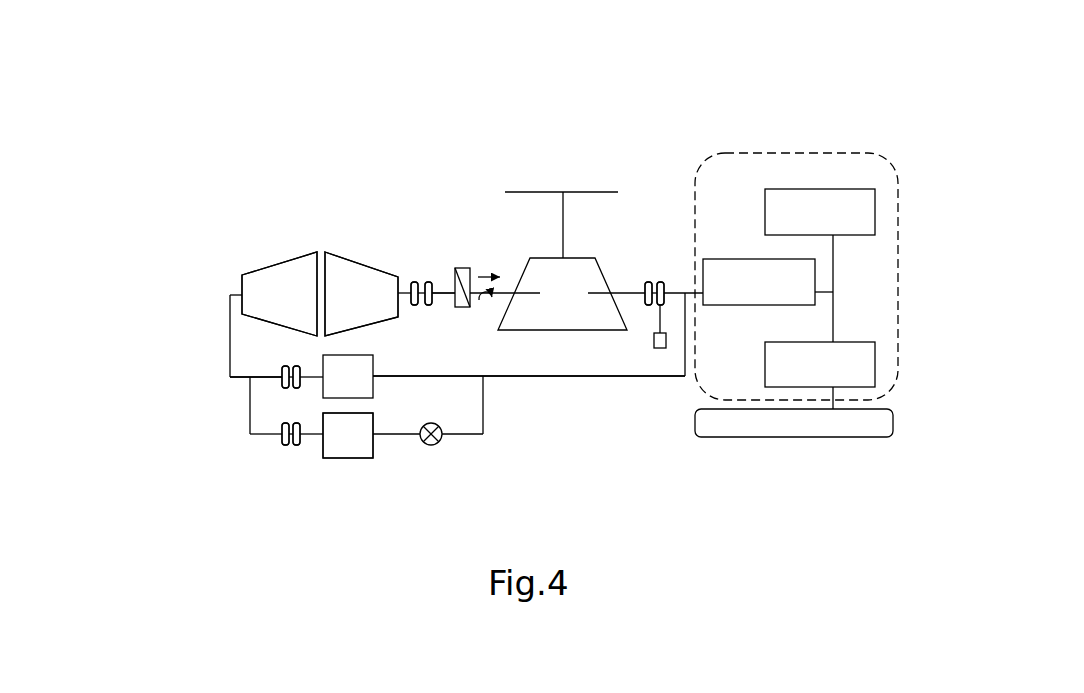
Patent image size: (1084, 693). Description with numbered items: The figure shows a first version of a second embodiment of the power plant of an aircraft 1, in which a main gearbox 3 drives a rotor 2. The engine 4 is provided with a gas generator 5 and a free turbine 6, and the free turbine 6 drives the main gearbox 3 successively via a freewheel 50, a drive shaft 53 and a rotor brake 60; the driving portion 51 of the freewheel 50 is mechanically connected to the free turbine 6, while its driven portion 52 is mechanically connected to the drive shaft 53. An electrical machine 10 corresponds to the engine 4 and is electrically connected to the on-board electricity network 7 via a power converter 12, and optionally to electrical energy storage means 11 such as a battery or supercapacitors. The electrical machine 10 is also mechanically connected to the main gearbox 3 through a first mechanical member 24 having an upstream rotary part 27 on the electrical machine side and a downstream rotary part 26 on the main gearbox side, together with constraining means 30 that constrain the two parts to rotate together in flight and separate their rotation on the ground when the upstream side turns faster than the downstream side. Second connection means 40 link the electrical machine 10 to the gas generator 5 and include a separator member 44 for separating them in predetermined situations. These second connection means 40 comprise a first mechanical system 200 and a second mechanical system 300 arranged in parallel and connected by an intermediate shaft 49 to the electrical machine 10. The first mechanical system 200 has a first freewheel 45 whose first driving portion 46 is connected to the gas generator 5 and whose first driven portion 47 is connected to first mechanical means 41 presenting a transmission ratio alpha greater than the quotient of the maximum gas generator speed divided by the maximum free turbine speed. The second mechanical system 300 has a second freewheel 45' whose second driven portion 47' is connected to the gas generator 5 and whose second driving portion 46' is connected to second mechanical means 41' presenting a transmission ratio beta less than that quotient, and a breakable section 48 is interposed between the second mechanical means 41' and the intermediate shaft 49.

The aircraft 1 is at (824, 100).
The rotor 2 is at (587, 173).
The main gearbox 3 is at (554, 306).
The engine 4 is at (275, 220).
The gas generator 5 is at (271, 306).
The free turbine 6 is at (348, 306).
The electricity network 7 is at (790, 437).
The electrical machine 10 is at (743, 295).
The electrical energy storage means 11 is at (800, 225).
The power converter 12 is at (804, 378).
The first mechanical member 24 is at (650, 257).
The downstream rotary part 26 is at (645, 283).
The upstream rotary part 27 is at (660, 283).
The constraining means 30 is at (654, 341).
The second connection means 40 is at (545, 389).
The first mechanical means 41 is at (375, 355).
The second mechanical means 41' is at (390, 466).
The separator member 44 is at (350, 467).
The first freewheel 45 is at (233, 375).
The second freewheel 45' is at (250, 462).
The first driving portion 46 is at (220, 344).
The second driving portion 46' is at (316, 468).
The first driven portion 47 is at (247, 336).
The second driven portion 47' is at (263, 468).
The breakable section 48 is at (441, 445).
The intermediate shaft 49 is at (602, 378).
The freewheel 50 is at (425, 255).
The driving portion 51 is at (413, 283).
The driven portion 52 is at (430, 306).
The drive shaft 53 is at (433, 290).
The rotor brake 60 is at (463, 268).
The first mechanical system 200 is at (390, 385).
The second mechanical system 300 is at (250, 443).